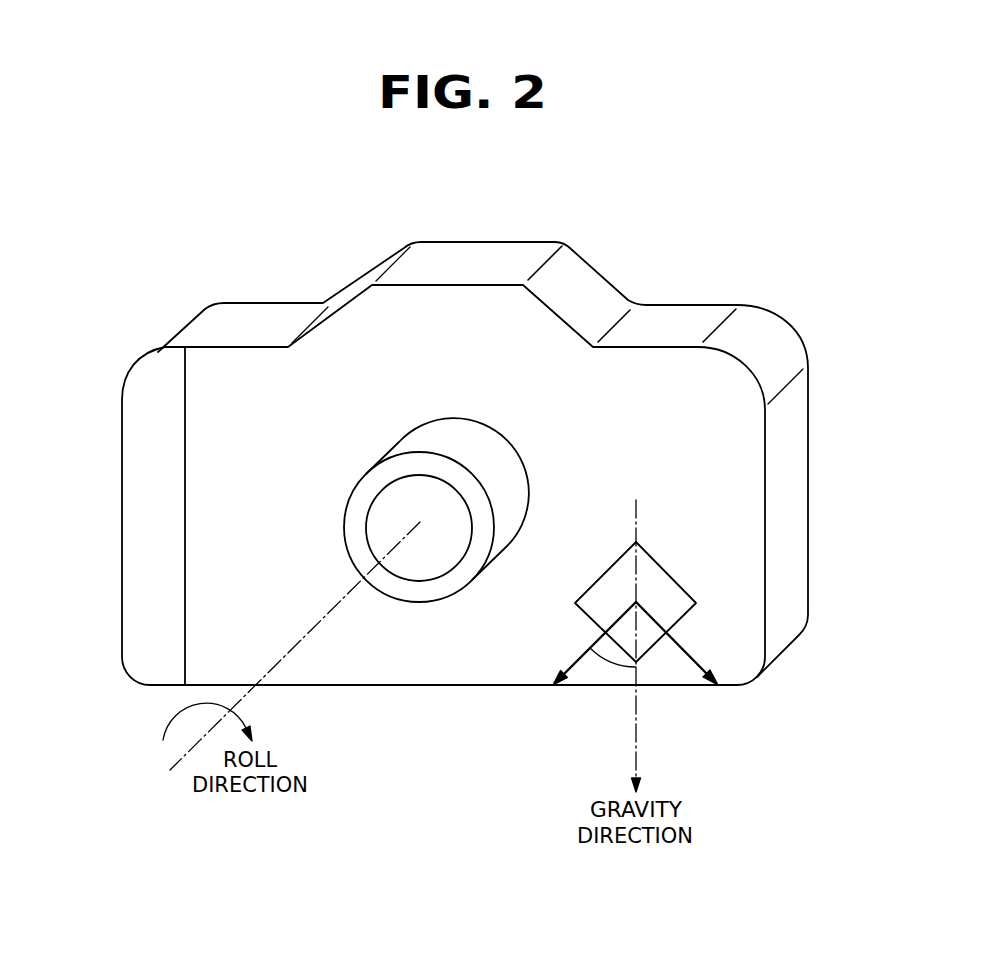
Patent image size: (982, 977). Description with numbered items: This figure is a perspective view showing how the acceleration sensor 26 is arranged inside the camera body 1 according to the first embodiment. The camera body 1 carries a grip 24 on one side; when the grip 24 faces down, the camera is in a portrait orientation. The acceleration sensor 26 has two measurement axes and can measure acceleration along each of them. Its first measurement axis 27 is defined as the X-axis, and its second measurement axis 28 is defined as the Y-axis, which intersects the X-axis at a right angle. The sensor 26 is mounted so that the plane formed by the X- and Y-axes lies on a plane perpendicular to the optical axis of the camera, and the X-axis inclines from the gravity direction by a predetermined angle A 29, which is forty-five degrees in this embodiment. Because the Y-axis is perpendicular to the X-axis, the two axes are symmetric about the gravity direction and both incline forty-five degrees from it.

The camera body 1 is at (655, 385).
The grip 24 is at (158, 512).
The acceleration sensor 26 is at (652, 556).
The first measurement axis 27 is at (580, 653).
The second measurement axis 28 is at (687, 646).
The predetermined angle A 29 is at (614, 671).